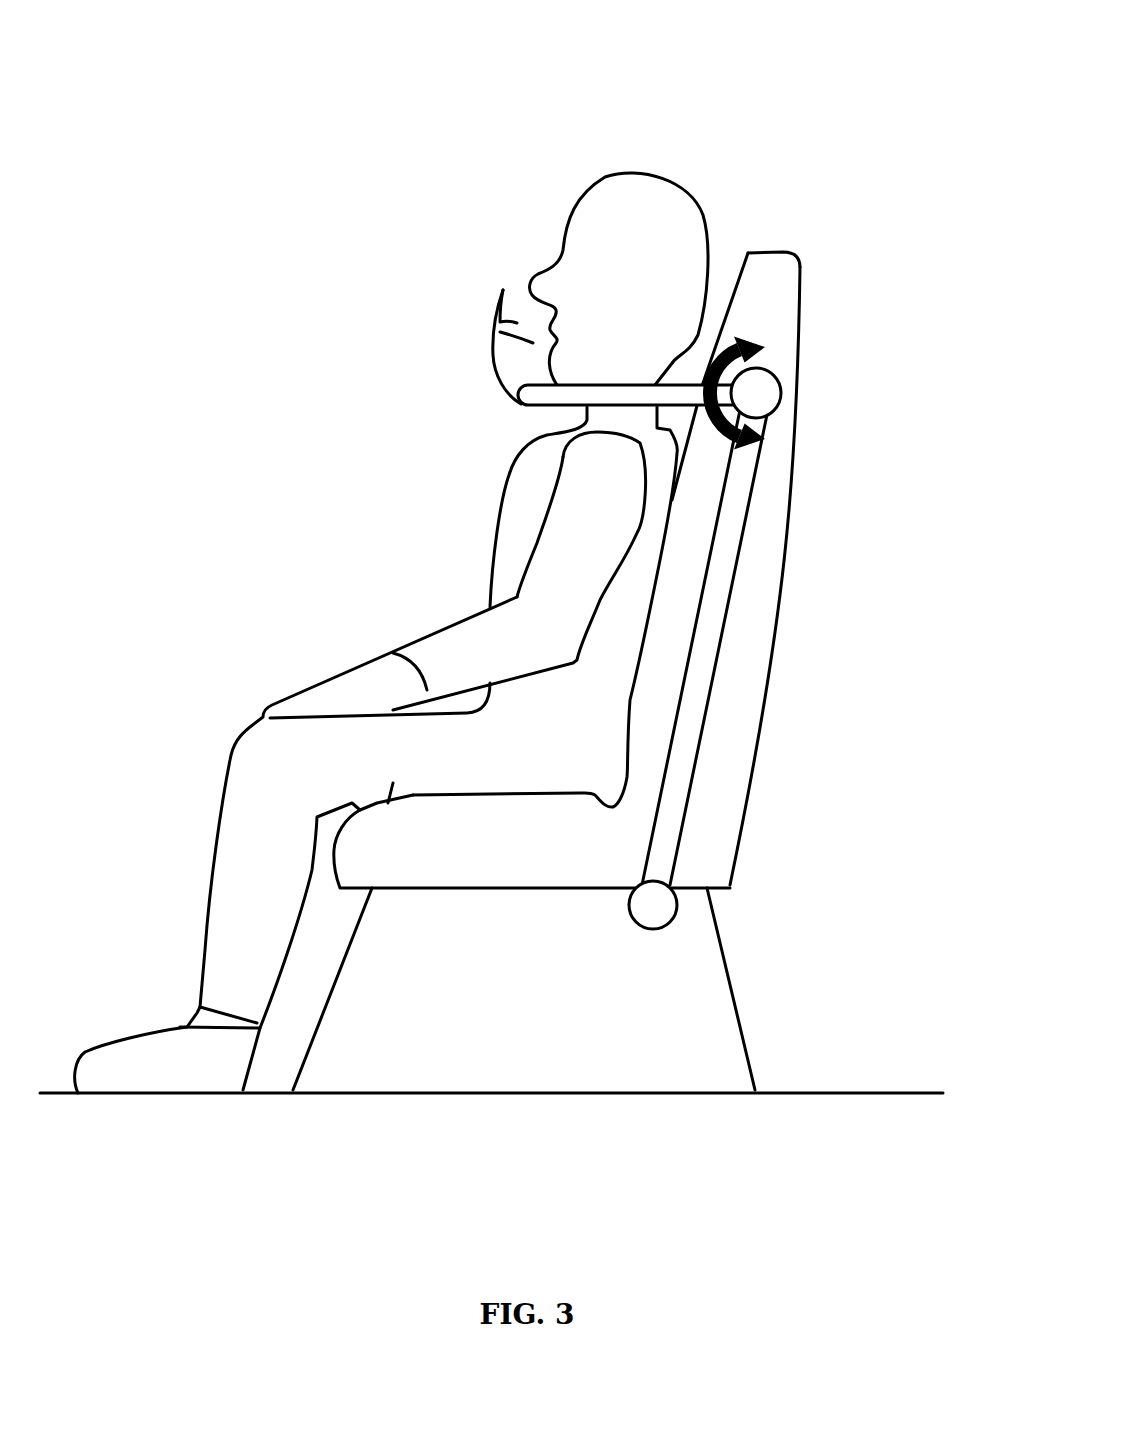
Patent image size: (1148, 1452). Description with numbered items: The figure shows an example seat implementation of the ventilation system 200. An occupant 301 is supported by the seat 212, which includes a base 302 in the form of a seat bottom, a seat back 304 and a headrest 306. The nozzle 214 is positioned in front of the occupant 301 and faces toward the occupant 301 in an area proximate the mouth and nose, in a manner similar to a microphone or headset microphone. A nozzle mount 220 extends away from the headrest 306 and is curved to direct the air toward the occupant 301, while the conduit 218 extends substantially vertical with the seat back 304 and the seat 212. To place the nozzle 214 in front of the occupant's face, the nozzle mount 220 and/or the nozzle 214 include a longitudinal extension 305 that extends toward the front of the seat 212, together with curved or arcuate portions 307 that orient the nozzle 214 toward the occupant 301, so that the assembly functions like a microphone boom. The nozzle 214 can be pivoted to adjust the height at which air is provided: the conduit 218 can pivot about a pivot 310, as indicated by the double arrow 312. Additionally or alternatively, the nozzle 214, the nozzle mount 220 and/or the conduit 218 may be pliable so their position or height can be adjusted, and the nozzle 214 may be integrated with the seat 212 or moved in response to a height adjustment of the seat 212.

The ventilation system 200 is at (826, 73).
The seat 212 is at (856, 200).
The nozzle 214 is at (475, 333).
The conduit 218 is at (727, 533).
The nozzle mount 220 is at (560, 393).
The occupant 301 is at (590, 230).
The base 302 is at (473, 847).
The seat back 304 is at (660, 660).
The longitudinal extension 305 is at (667, 385).
The headrest 306 is at (773, 287).
The curved portion 307 is at (532, 392).
The pivot 310 is at (642, 912).
The double arrow 312 is at (753, 333).